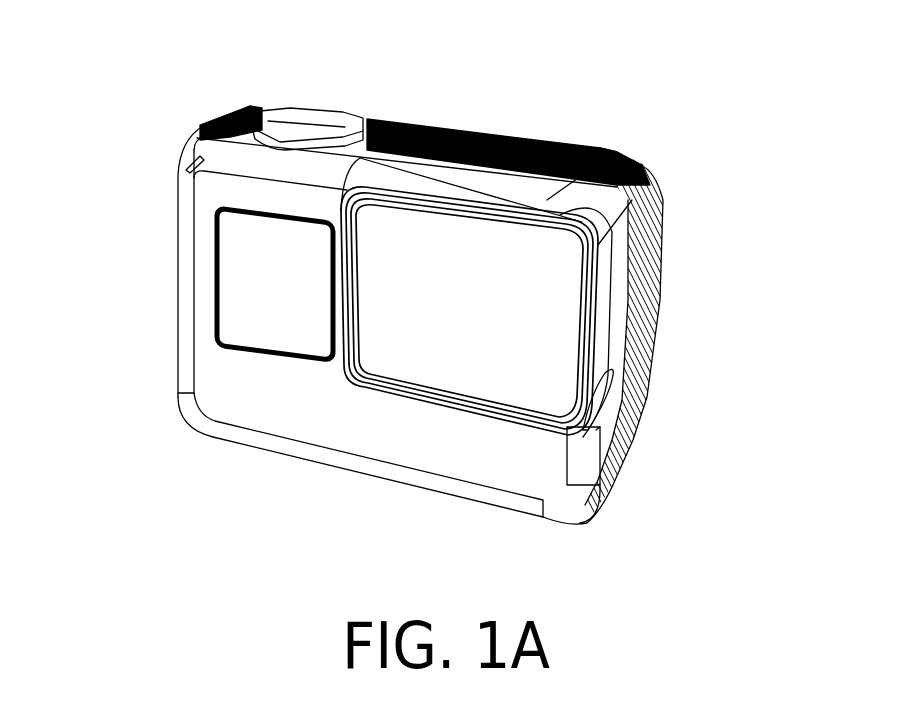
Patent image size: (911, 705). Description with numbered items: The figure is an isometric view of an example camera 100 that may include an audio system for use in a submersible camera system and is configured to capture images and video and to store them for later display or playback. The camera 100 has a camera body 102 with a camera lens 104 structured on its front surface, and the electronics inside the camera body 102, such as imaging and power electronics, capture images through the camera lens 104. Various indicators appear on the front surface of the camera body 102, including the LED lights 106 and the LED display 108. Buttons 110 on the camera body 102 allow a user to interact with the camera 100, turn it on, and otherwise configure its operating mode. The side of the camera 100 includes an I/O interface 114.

The camera 100 is at (466, 263).
The camera body 102 is at (573, 140).
The camera lens 104 is at (540, 328).
The LED lights 106 is at (188, 150).
The LED display 108 is at (226, 294).
The buttons 110 is at (303, 100).
The I/O interface 114 is at (640, 432).